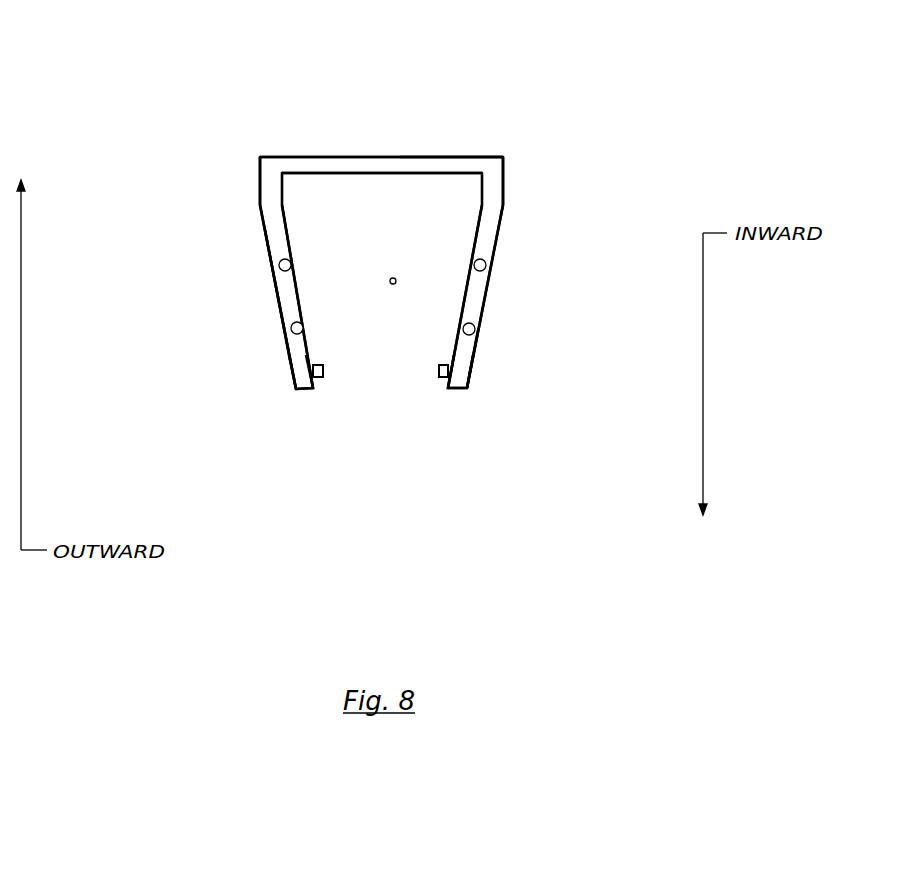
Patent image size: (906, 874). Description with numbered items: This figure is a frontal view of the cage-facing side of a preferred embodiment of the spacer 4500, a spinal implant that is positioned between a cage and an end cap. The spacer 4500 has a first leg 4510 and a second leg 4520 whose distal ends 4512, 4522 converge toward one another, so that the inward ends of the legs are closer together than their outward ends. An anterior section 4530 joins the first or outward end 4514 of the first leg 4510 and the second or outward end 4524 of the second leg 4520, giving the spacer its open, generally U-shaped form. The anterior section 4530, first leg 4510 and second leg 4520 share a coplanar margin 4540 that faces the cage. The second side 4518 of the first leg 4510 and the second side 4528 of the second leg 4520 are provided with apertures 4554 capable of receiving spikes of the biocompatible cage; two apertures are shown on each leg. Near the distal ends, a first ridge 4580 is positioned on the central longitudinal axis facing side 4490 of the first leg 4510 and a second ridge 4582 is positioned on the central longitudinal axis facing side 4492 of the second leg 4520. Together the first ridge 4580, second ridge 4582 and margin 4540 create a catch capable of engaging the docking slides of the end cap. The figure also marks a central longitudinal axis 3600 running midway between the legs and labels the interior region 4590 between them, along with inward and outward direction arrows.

The centerline / axis 3600 is at (437, 172).
The central longitudinal axis facing side 4490 is at (294, 238).
The central longitudinal axis facing side 4492 is at (454, 298).
The spacer 4500 is at (490, 273).
The first leg 4510 is at (268, 318).
The distal end 4512 is at (298, 399).
The outward end 4514 is at (250, 179).
The second side 4518 is at (270, 292).
The second leg 4520 is at (507, 250).
The distal end 4522 is at (460, 400).
The outward end 4524 is at (514, 177).
The second side 4528 is at (476, 360).
The anterior section 4530 is at (458, 146).
The coplanar margin 4540 is at (318, 147).
The apertures 4554 is at (266, 254).
The first ridge 4580 is at (324, 391).
The second ridge 4582 is at (435, 386).
The interior cavity 4590 is at (453, 147).